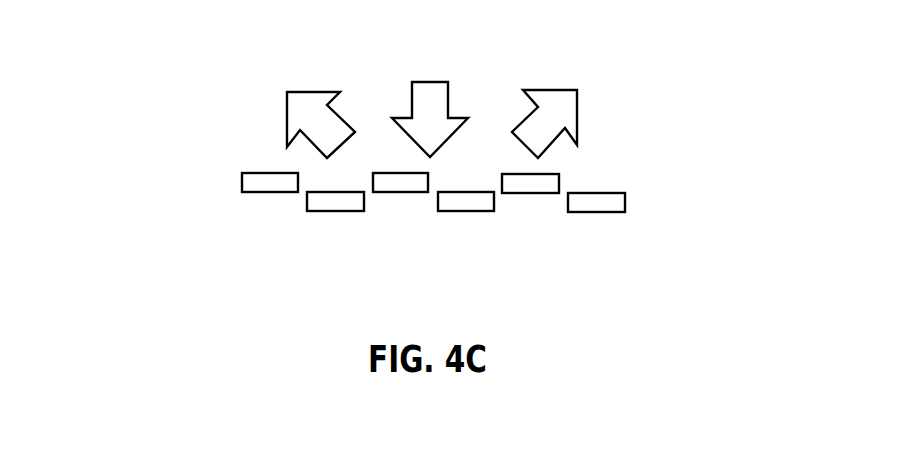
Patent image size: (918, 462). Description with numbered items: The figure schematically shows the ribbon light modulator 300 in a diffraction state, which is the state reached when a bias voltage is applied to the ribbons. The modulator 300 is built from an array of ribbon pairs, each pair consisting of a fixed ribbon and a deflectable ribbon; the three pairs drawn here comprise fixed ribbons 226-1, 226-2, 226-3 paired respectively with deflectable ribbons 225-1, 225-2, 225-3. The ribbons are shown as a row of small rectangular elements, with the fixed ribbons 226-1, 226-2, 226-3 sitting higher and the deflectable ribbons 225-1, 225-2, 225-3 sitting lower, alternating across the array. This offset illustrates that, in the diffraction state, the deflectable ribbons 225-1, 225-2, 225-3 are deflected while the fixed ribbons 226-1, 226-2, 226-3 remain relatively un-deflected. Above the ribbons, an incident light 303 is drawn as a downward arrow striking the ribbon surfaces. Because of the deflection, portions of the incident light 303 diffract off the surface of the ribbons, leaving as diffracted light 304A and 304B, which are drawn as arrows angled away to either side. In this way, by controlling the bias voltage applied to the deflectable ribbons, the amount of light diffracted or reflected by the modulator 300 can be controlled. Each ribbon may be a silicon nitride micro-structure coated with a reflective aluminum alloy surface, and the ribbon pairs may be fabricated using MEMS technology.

The light modulator 300 is at (150, 105).
The incident light 303 is at (450, 92).
The diffracted light 304A is at (318, 92).
The diffracted light 304B is at (578, 105).
The deflectable ribbon 225-1 is at (600, 212).
The deflectable ribbon 225-2 is at (445, 211).
The deflectable ribbon 225-3 is at (330, 211).
The fixed ribbon 226-1 is at (523, 193).
The fixed ribbon 226-2 is at (408, 192).
The fixed ribbon 226-3 is at (262, 192).